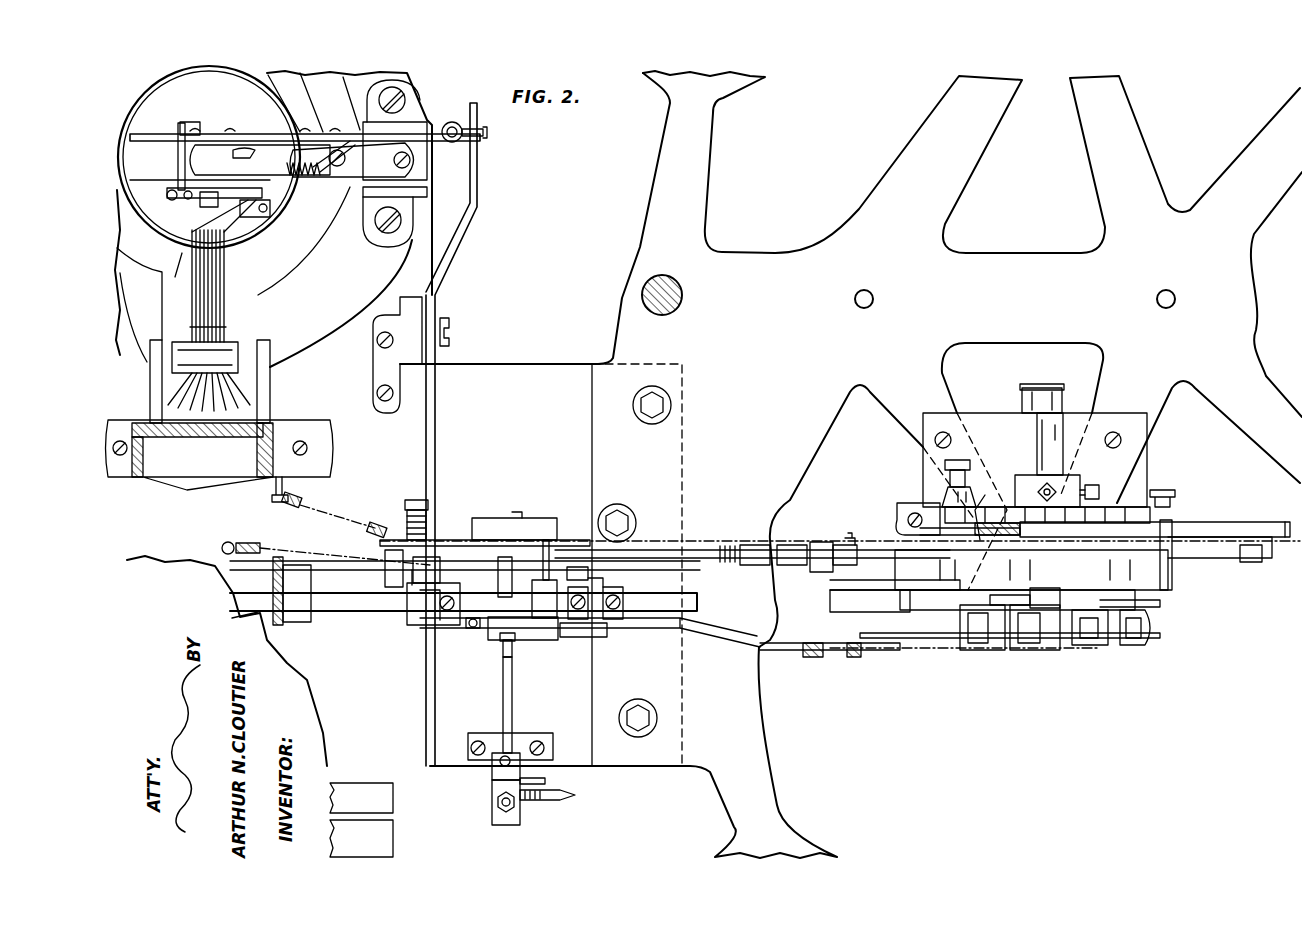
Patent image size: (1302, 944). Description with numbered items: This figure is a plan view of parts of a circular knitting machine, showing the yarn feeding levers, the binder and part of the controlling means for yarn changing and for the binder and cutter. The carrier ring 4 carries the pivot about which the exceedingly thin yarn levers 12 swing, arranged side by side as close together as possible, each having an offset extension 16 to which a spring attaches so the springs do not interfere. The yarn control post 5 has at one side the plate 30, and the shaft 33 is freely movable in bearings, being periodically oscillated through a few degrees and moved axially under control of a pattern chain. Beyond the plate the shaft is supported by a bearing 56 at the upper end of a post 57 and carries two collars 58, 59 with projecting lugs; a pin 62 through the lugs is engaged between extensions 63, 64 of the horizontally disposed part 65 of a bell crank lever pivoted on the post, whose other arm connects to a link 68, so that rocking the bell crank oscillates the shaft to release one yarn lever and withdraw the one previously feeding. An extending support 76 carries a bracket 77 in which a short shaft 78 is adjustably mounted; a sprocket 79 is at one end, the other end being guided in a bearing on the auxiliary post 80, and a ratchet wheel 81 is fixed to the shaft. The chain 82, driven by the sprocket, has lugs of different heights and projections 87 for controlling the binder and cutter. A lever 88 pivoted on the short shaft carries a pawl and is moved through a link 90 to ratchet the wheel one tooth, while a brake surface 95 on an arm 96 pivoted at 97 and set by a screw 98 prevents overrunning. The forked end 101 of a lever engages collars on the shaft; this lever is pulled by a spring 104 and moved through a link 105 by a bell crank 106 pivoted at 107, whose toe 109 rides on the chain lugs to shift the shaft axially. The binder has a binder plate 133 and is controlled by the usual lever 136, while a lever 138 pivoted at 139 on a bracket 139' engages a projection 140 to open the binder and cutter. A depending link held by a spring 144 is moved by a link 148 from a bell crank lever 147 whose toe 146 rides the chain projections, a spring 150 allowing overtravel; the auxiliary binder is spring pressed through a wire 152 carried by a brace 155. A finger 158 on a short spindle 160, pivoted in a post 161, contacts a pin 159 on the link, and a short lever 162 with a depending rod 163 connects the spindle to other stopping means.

The carrier ring 4 is at (290, 250).
The yarn control lever bracket or post 5 is at (180, 437).
The yarn levers or fingers 12 is at (213, 293).
The extensions 16 is at (240, 415).
The plate 30 is at (285, 488).
The shaft 33 is at (230, 620).
The bearing 56 is at (540, 640).
The post 57 is at (530, 525).
The collar 58 is at (300, 625).
The collar 59 is at (420, 625).
The pin 62 is at (345, 565).
The extension 63 is at (380, 550).
The extension 64 is at (385, 580).
The horizontally disposed part of bell crank lever 65 is at (448, 535).
The link 68 is at (705, 540).
The extending support 76 is at (851, 464).
The bracket 77 is at (992, 420).
The short shaft 78 is at (1037, 450).
The sprocket 79 is at (1158, 607).
The auxiliary post or bracket 80 is at (1042, 384).
The ratchet wheel 81 is at (1105, 508).
The chain 82 is at (1090, 645).
The projection 87 is at (1140, 645).
The lever 88 is at (1235, 530).
The link 90 is at (1230, 548).
The brake surface 95 is at (986, 507).
The arm 96 is at (920, 532).
The pivot 97 is at (897, 515).
The screw 98 is at (945, 465).
The forked end 101 is at (618, 637).
The spring 104 is at (252, 548).
The link 105 is at (775, 604).
The bell crank 106 is at (880, 595).
The pivot 107 is at (915, 640).
The toe 109 is at (1030, 600).
The binder plate 133 is at (230, 169).
The lever 136 is at (447, 110).
The lever 138 is at (440, 255).
The pivot 139 is at (466, 329).
The bracket 139' is at (431, 355).
The projection 140 is at (487, 136).
The spring 144 is at (380, 520).
The toe 146 is at (1035, 650).
The bell crank lever 147 is at (975, 650).
The link 148 is at (780, 652).
The spring 150 is at (850, 657).
The wire 152 is at (305, 151).
The brace 155 is at (305, 152).
The finger 158 is at (515, 650).
The pin 159 is at (498, 638).
The short spindle 160 is at (503, 708).
The post 161 is at (492, 770).
The short lever 162 is at (545, 781).
The depending rod 163 is at (575, 797).